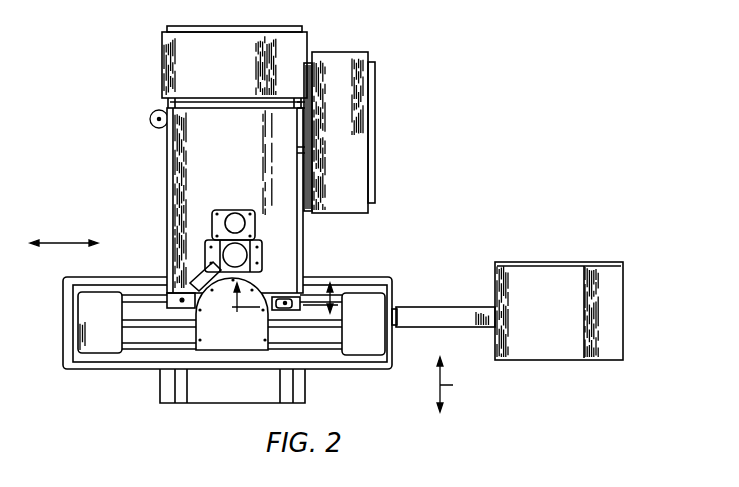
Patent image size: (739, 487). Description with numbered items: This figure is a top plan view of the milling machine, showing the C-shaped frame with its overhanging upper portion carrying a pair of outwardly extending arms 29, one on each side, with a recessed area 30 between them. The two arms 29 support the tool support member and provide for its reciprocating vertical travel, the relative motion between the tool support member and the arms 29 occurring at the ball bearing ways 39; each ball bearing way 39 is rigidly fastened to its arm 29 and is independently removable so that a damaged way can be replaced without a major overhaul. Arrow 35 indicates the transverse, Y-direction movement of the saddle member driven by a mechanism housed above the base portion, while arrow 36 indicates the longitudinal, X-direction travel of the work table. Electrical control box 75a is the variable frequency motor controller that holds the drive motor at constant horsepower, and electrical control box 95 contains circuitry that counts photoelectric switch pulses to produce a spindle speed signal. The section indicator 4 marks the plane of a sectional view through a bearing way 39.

The electrical control box 95 is at (160, 68).
The electrical control box 75a is at (356, 151).
The recessed area 30 is at (263, 287).
The outwardly extending arms 29 is at (170, 309).
The ball bearing way 39 is at (183, 309).
The section line 4- 4 is at (289, 307).
The arrow 35 is at (458, 384).
The arrow 36 is at (53, 243).